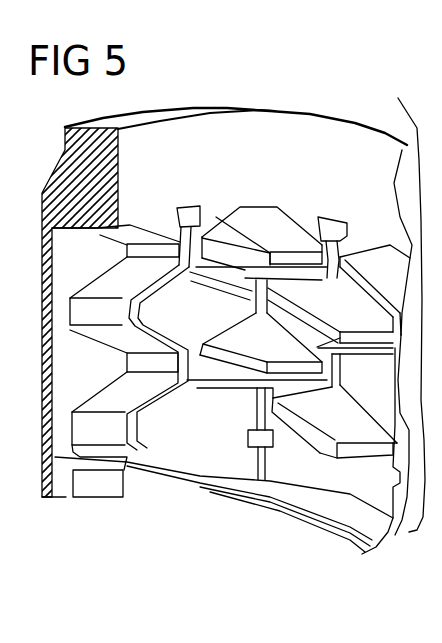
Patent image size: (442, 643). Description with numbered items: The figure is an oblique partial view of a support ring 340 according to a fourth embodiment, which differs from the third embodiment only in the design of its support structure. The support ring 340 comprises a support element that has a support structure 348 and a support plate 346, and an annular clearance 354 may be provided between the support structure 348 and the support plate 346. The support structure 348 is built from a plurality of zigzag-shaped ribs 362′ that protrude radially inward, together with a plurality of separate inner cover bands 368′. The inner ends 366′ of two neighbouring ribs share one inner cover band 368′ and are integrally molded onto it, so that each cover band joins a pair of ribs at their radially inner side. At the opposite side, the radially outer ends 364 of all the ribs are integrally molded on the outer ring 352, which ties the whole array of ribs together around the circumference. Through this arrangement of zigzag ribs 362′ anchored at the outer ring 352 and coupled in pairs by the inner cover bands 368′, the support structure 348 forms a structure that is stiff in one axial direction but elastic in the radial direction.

The support ring 340 is at (337, 286).
The support plate 346 is at (80, 365).
The support structure 348 is at (99, 503).
The outer ring 352 is at (236, 114).
The annular clearance 354 is at (251, 534).
The zigzag-shaped rib 362′ is at (116, 335).
The radially outer ends 364 is at (260, 164).
The inner end 366′ is at (161, 357).
The inner cover band 368′ is at (224, 505).